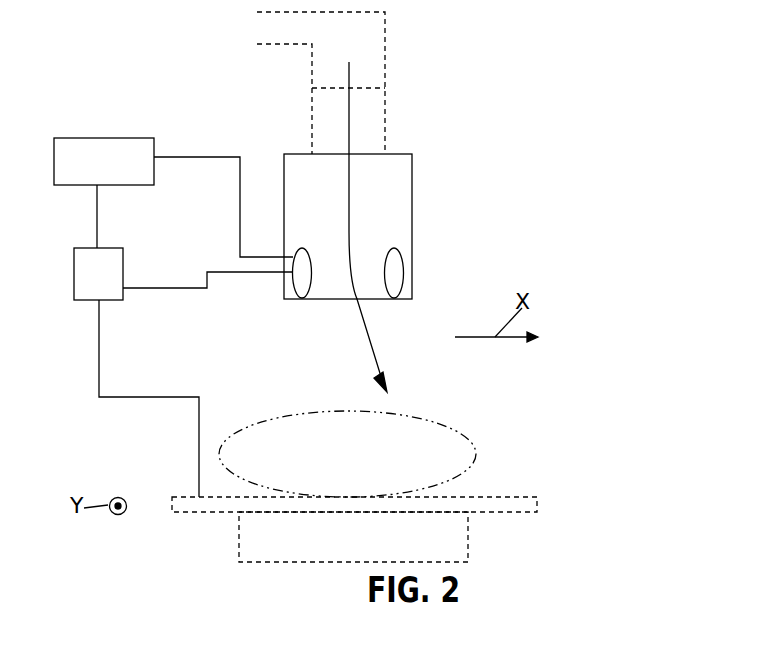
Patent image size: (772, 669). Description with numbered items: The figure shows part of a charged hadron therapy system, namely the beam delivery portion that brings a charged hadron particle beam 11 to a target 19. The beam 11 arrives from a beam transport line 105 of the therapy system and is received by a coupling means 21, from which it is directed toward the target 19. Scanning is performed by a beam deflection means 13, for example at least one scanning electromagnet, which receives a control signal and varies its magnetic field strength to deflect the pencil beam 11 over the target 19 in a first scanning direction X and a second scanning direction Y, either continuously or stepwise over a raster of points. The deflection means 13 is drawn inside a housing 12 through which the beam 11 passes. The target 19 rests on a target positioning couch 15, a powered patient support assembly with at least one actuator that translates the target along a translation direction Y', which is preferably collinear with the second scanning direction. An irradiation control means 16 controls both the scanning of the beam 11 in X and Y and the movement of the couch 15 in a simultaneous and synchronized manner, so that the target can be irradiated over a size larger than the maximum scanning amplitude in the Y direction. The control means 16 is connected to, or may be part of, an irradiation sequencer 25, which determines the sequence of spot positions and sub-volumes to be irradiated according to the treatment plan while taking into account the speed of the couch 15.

The beam transport line 105 is at (385, 60).
The coupling means 21 is at (385, 103).
The charged hadron particle beam 11 is at (349, 192).
The deflector unit 12 is at (412, 200).
The beam deflection means 13 is at (403, 260).
The irradiation sequencer 25 is at (95, 138).
The irradiation control means 16 is at (82, 300).
The target 19 is at (467, 440).
The target positioning couch 15 is at (537, 500).